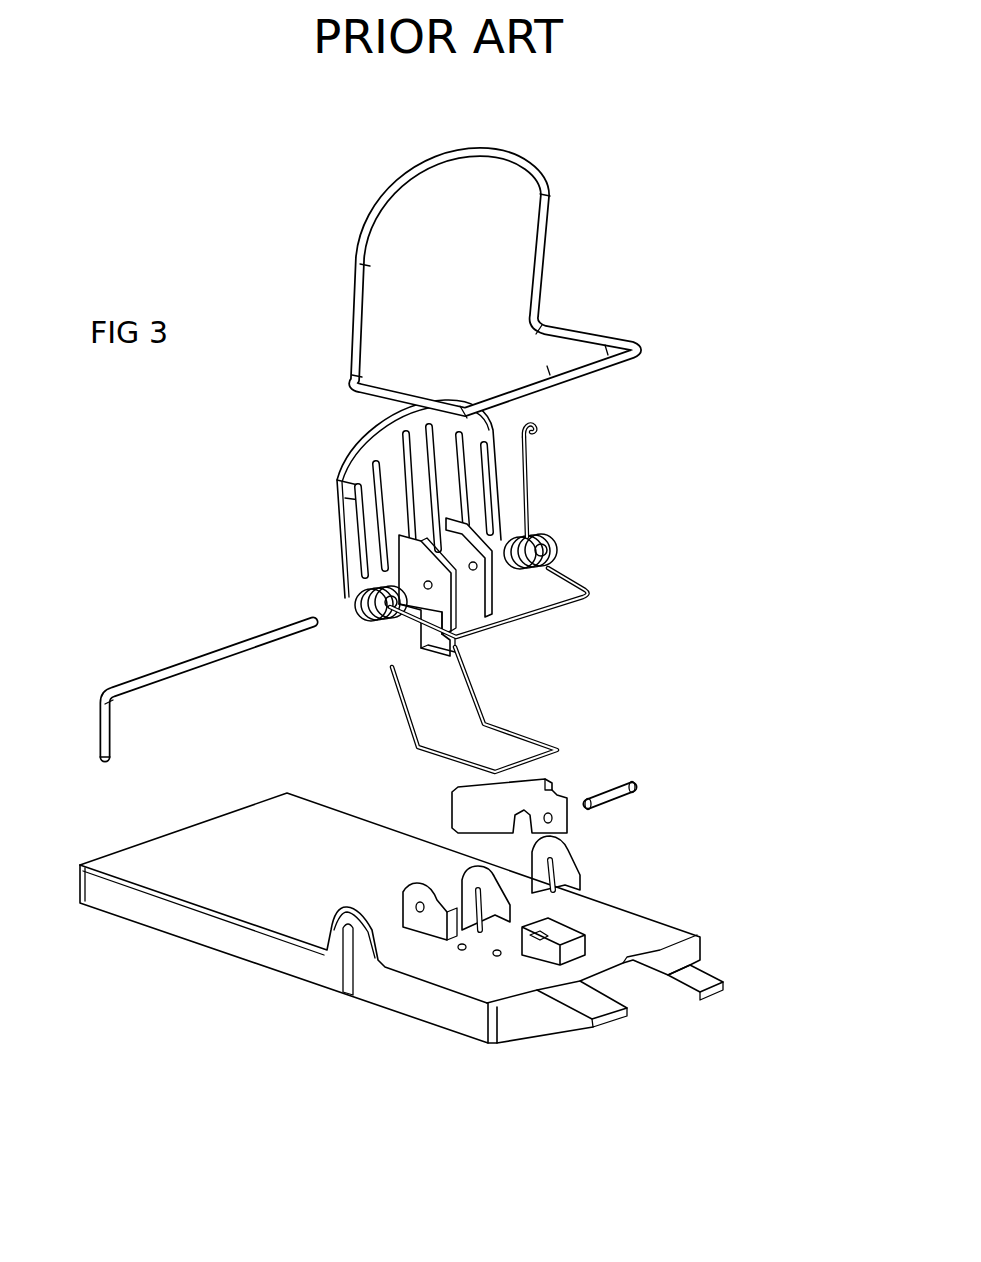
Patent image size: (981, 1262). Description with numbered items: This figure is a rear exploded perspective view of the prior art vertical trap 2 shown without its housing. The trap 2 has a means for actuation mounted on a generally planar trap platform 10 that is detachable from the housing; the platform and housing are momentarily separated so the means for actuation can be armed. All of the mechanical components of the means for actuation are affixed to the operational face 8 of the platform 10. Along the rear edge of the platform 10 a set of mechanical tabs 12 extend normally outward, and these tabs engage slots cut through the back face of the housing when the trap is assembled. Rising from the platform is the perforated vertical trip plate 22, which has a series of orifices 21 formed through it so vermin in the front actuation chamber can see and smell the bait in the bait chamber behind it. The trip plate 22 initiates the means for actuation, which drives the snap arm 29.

The prior art vertical trap 2 is at (143, 1062).
The operational face 8 is at (130, 860).
The trap platform 10 is at (403, 1003).
The mechanical tabs 12 is at (713, 967).
The orifices 21 is at (497, 443).
The vertical trip plate 22 is at (371, 443).
The snap arm 29 is at (527, 160).